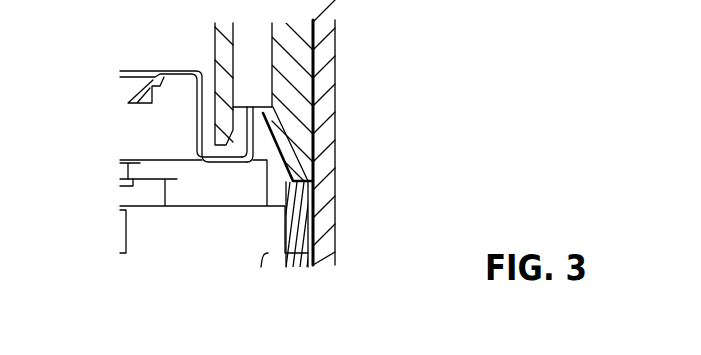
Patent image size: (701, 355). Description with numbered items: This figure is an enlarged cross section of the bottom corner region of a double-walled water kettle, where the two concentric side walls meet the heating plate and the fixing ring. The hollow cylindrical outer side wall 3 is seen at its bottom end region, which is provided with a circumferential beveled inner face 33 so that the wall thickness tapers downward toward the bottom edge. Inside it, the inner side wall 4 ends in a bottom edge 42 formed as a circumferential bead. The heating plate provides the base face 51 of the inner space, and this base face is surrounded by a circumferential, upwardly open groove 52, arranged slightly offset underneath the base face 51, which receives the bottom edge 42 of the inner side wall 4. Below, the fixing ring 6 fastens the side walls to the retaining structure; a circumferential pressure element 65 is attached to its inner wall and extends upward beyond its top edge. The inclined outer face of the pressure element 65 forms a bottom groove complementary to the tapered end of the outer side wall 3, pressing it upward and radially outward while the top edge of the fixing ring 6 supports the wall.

The outer side wall 3 is at (283, 80).
The inner side wall 4 is at (228, 47).
The fixing ring 6 is at (262, 215).
The beveled inner face 33 is at (278, 160).
The bottom edge 42 is at (123, 167).
The base face 51 is at (128, 103).
The groove 52 is at (240, 132).
The pressure element 65 is at (303, 188).